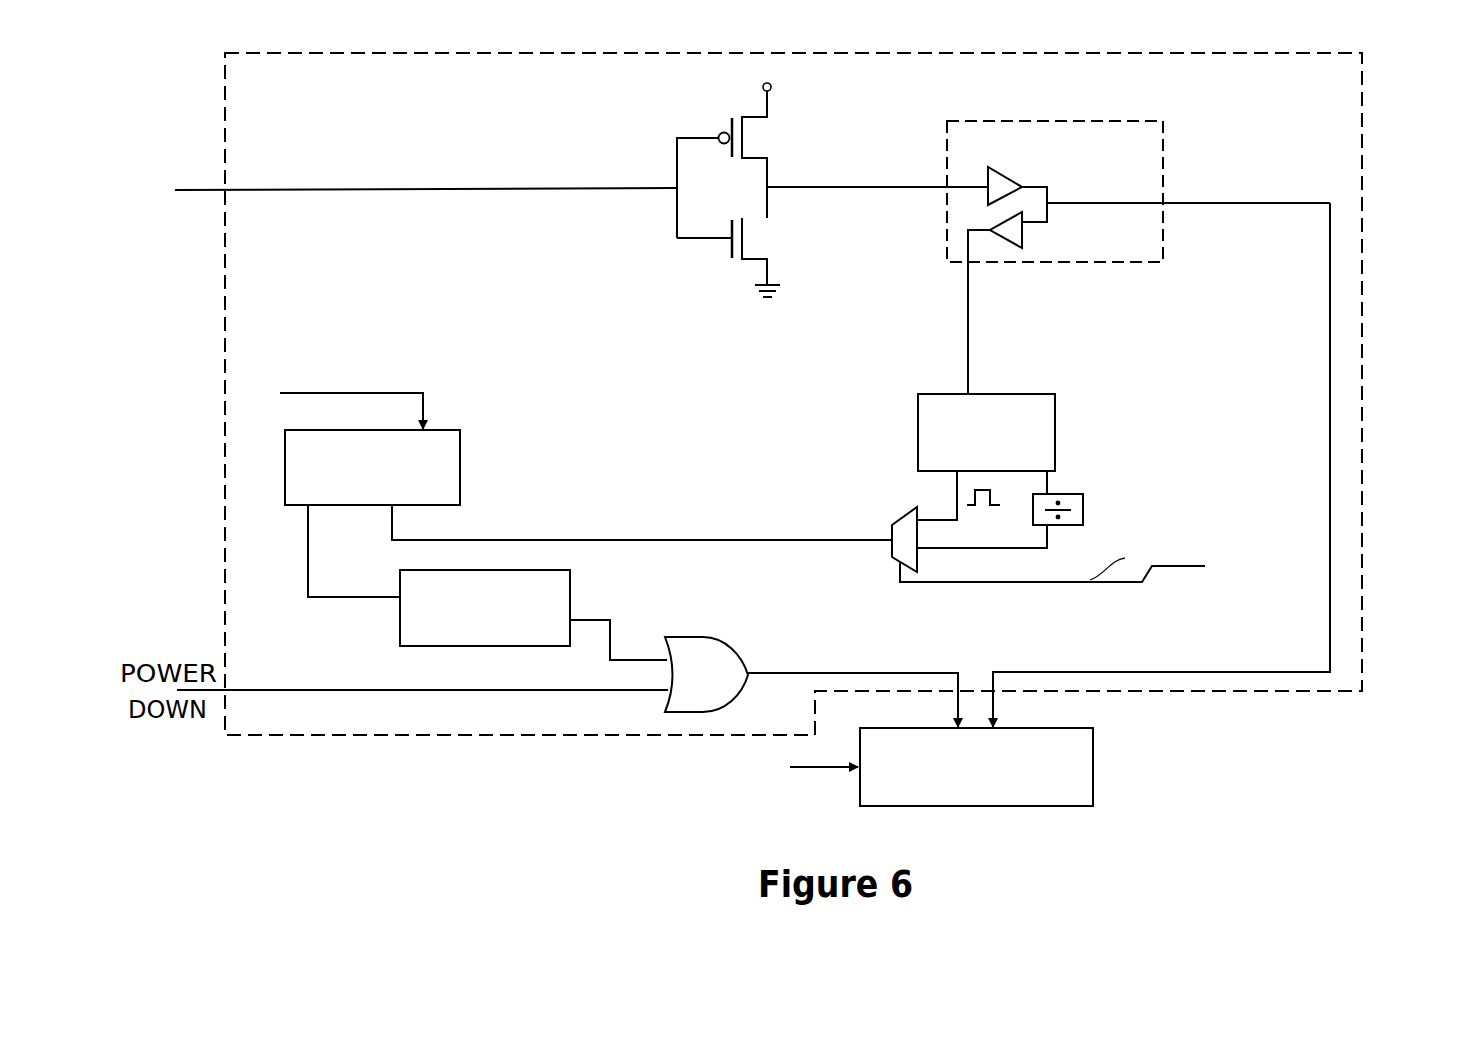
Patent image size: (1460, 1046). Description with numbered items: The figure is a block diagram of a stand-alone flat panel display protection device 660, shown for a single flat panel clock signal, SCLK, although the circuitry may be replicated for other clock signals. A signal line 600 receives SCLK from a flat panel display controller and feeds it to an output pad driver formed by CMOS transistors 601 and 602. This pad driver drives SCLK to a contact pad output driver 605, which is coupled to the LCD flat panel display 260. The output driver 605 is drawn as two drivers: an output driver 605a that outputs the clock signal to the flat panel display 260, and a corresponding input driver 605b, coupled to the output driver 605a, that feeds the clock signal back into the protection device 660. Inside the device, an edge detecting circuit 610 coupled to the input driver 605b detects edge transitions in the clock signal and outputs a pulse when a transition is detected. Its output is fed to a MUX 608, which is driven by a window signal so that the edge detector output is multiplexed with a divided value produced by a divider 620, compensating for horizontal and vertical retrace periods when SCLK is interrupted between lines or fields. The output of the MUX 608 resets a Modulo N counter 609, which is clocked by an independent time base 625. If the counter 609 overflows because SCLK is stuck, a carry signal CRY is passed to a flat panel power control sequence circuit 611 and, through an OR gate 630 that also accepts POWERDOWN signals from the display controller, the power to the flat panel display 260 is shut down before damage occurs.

The LCD flat panel display 260 is at (1093, 752).
The signal line 600 is at (557, 190).
The CMOS transistor 601 is at (745, 138).
The CMOS transistor 602 is at (745, 239).
The contact pad output driver 605 is at (1138, 234).
The output driver 605a is at (1040, 156).
The input driver 605b is at (1025, 233).
The MUX 608 is at (900, 520).
The Modulo N counter 609 is at (460, 483).
The edge detecting circuit 610 is at (1030, 394).
The flat panel power control sequence circuit 611 is at (570, 585).
The divider 620 is at (1083, 510).
The independent time base 625 is at (420, 393).
The OR gate 630 is at (705, 637).
The stand-alone flat panel display protection device 660 is at (1362, 611).